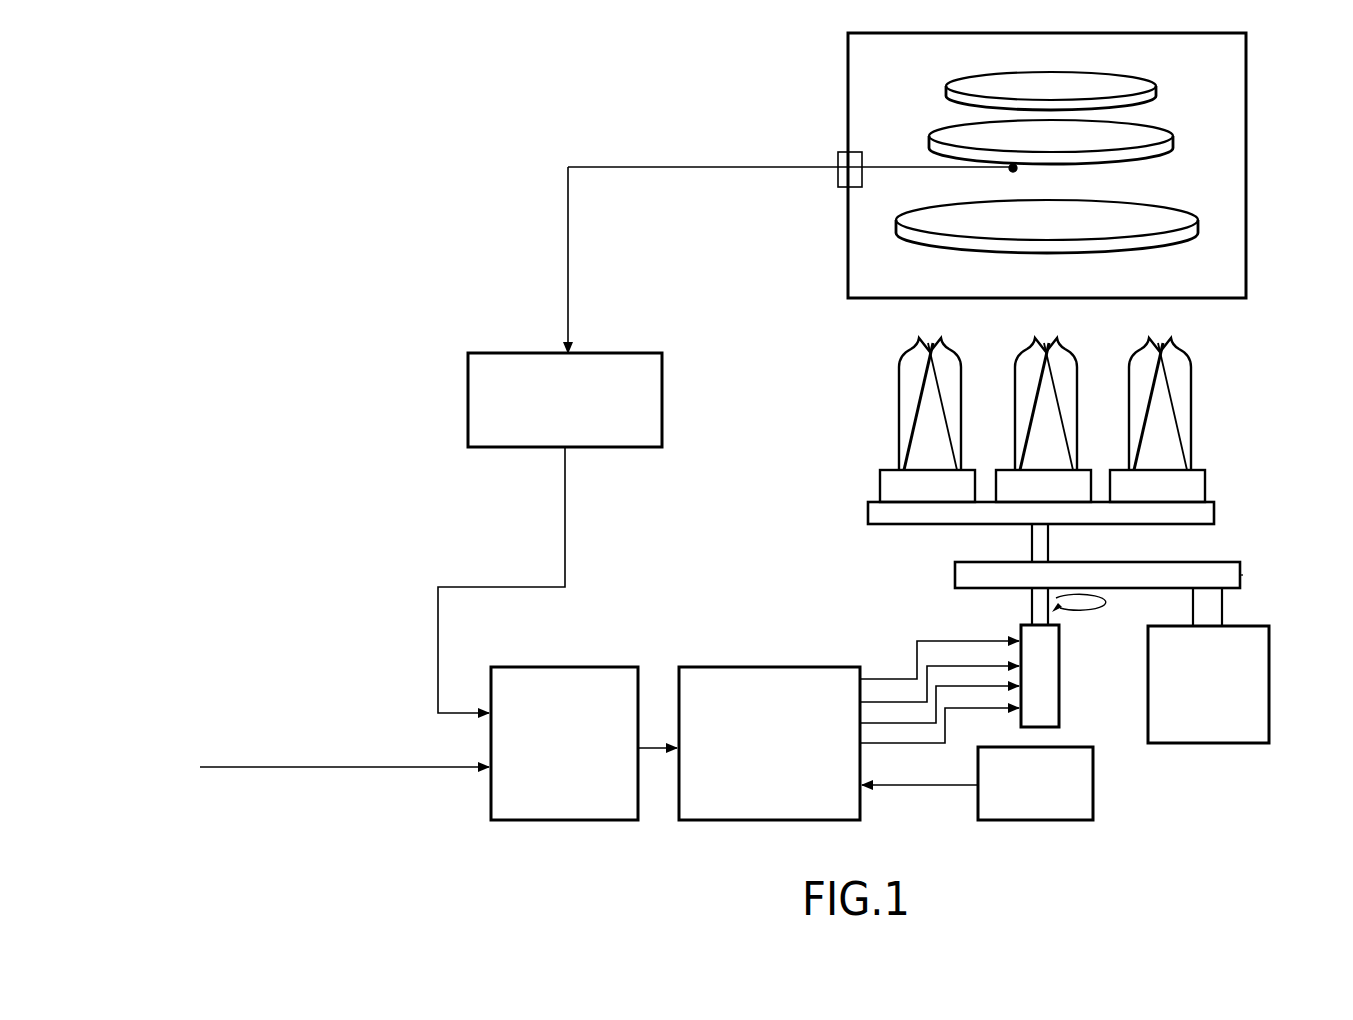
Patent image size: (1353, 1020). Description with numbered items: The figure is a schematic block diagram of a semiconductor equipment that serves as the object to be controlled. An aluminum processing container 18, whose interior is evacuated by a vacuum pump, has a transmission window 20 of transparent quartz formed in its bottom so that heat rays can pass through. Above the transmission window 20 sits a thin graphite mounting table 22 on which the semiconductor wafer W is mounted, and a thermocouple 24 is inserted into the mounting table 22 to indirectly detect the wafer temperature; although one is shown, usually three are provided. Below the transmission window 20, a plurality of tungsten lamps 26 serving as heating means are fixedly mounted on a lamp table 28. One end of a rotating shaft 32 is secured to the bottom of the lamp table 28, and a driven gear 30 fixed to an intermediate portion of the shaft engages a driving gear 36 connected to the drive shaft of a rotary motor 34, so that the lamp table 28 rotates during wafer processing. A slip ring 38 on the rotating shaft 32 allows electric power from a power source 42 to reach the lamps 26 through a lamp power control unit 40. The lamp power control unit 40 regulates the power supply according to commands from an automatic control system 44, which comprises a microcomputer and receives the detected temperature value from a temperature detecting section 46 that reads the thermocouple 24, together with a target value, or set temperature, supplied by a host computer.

The processing container 18 is at (1247, 200).
The semiconductor wafer W is at (1156, 78).
The mounting table 22 is at (1173, 145).
The transmission window 20 is at (1198, 235).
The thermocouple 24 is at (1013, 168).
The tungsten lamps 26 is at (1190, 405).
The lamp table 28 is at (1214, 512).
The rotating shaft 32 is at (1048, 542).
The driven gear 30 is at (955, 577).
The driving gear 36 is at (1240, 577).
The slip ring 38 is at (1059, 672).
The rotary motor 34 is at (1269, 668).
The power source 42 is at (1093, 783).
The lamp power control unit 40 is at (795, 667).
The automatic control system 44 is at (584, 667).
The temperature detecting section 46 is at (662, 405).